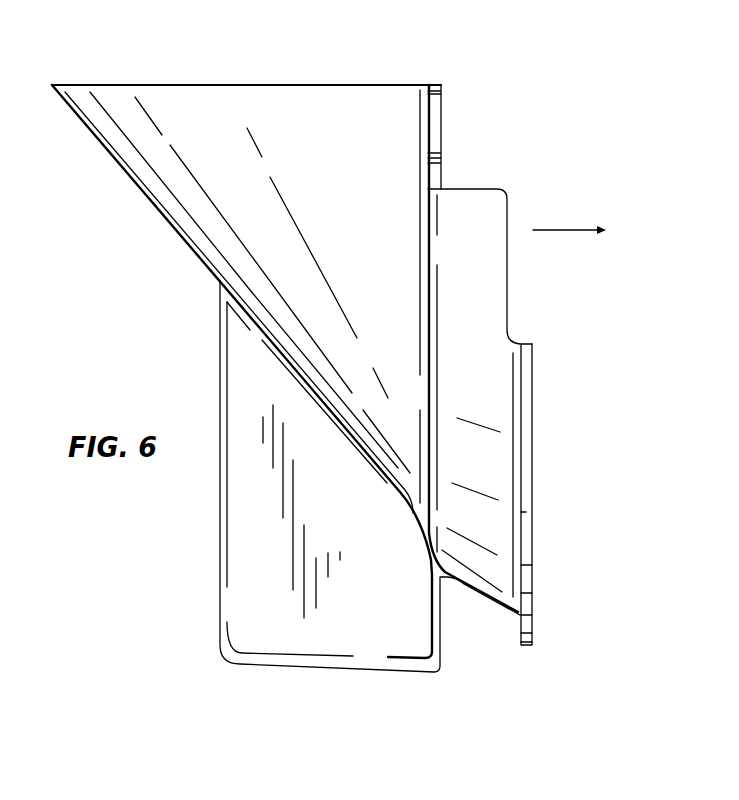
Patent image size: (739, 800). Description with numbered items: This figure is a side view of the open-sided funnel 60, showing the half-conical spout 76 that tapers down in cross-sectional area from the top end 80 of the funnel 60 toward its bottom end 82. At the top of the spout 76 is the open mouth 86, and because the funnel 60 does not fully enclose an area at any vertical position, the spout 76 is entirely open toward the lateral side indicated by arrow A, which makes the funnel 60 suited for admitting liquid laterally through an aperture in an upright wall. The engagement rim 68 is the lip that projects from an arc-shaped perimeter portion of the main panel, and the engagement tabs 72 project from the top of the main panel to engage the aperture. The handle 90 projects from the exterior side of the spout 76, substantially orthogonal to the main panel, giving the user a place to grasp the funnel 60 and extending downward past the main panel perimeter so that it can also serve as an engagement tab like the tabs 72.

The funnel 60 is at (563, 121).
The engagement rim 68 is at (527, 632).
The engagement tabs 72 is at (434, 127).
The spout 76 is at (178, 178).
The top end 80 is at (142, 62).
The bottom end 82 is at (348, 676).
The open mouth 86 is at (311, 84).
The handle 90 is at (250, 594).